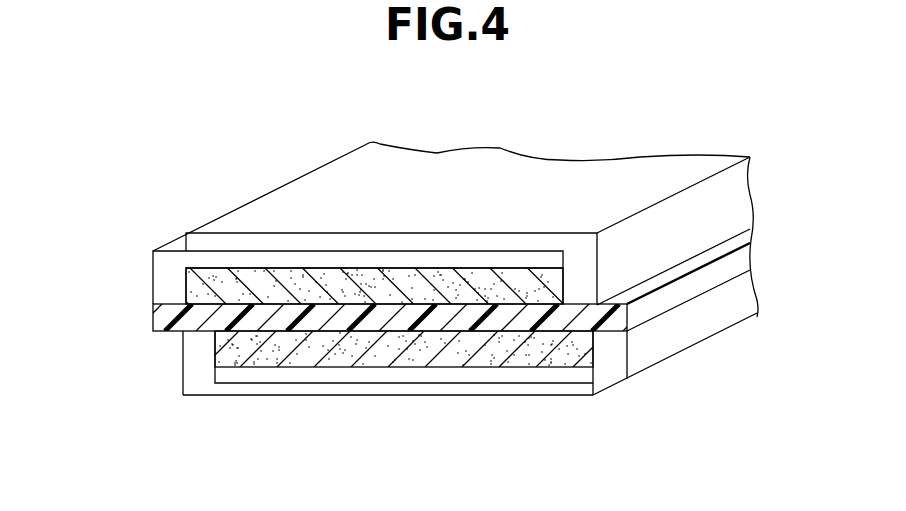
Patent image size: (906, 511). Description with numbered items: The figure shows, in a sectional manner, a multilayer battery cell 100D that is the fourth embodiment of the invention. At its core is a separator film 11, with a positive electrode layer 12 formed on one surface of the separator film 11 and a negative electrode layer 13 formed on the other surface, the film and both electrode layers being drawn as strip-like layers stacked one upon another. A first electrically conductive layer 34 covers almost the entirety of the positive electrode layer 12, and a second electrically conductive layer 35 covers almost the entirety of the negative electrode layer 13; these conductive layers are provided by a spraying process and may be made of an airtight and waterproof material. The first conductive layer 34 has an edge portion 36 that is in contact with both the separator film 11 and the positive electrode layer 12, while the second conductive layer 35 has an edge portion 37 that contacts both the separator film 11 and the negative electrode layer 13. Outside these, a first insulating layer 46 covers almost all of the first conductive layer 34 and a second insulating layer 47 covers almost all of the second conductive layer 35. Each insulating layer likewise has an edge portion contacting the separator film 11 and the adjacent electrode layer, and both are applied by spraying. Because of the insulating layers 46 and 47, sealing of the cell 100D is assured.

The multilayer battery cell 100D is at (748, 119).
The first electrically conductive layer 34 is at (175, 237).
The first insulating layer 46 is at (273, 230).
The edge portion 36 is at (168, 265).
The positive electrode layer 12 is at (203, 293).
The separator film 11 is at (162, 320).
The negative electrode layer 13 is at (232, 350).
The edge portion 37 is at (619, 352).
The second insulating layer 47 is at (388, 398).
The second electrically conductive layer 35 is at (648, 372).